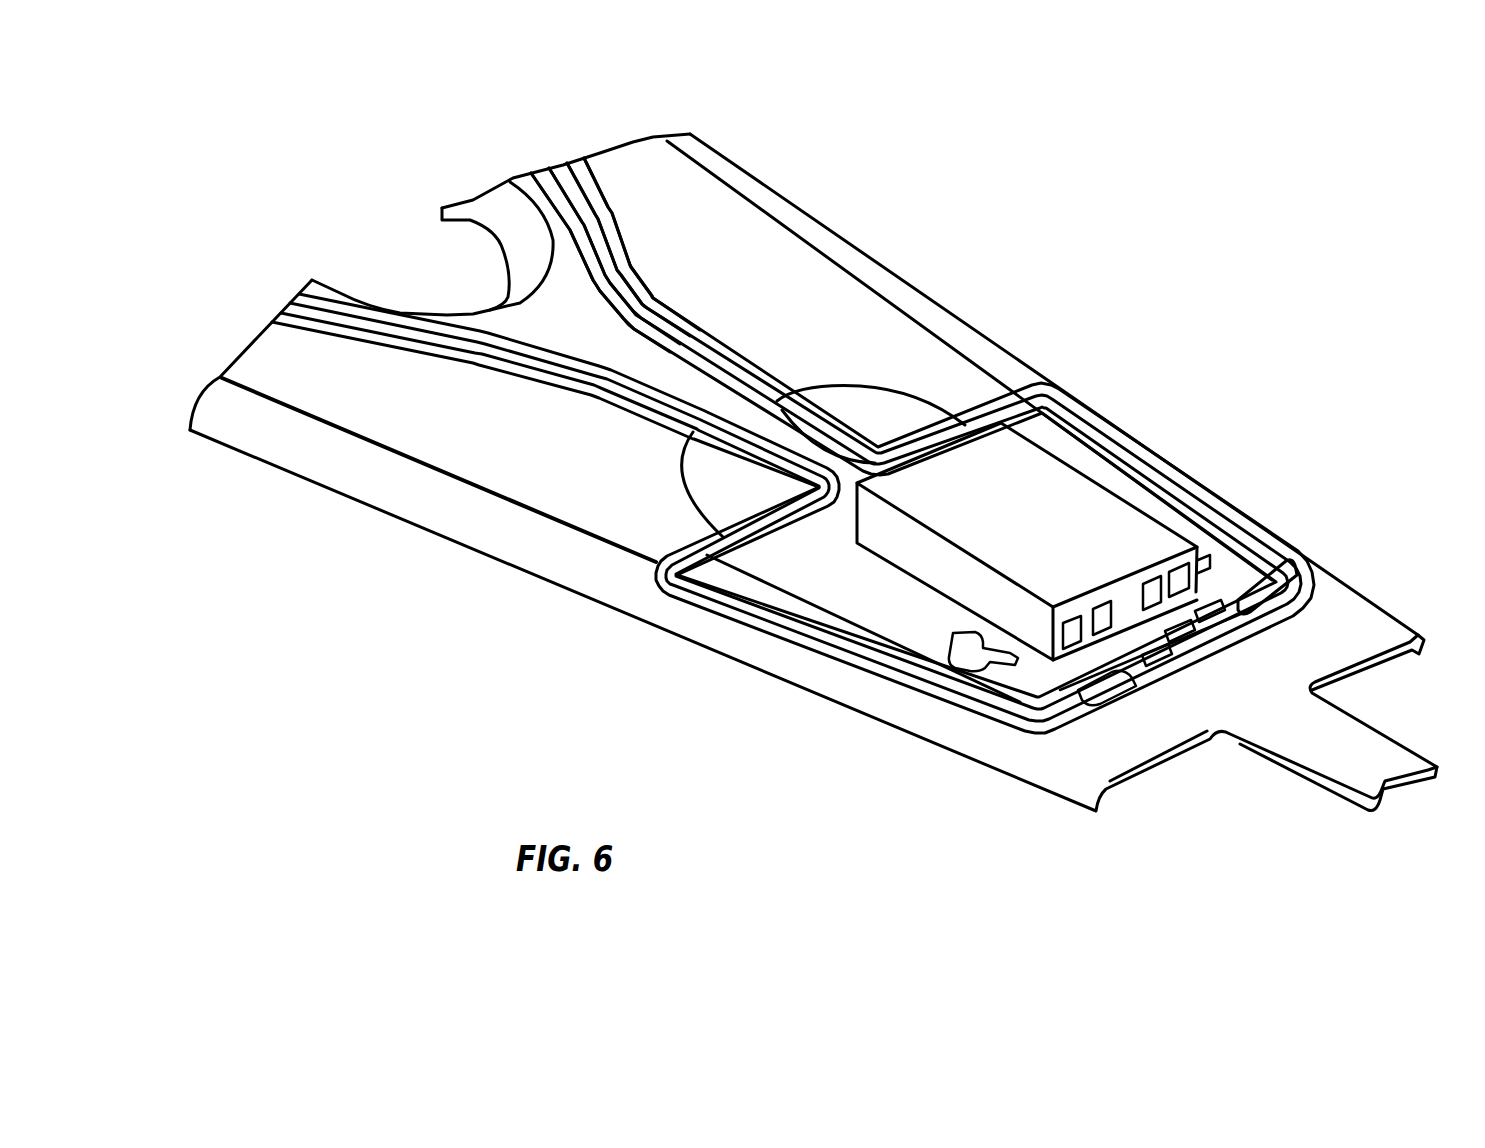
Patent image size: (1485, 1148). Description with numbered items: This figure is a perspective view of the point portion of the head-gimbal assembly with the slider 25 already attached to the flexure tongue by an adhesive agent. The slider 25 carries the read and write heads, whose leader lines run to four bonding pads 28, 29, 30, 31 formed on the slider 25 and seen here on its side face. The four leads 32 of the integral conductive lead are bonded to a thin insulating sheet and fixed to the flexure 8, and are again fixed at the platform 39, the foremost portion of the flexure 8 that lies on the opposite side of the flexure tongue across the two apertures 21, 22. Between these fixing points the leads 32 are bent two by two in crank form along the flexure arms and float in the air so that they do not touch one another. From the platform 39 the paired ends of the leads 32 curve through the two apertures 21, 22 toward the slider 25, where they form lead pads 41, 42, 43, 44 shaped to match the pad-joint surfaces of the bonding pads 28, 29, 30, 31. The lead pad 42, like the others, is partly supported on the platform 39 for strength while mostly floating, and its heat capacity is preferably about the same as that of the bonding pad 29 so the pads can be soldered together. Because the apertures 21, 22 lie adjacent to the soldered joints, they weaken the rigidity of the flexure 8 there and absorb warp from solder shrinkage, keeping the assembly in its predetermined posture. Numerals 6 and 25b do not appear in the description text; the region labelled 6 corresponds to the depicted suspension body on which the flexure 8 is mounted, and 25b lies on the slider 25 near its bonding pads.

The suspension load beam 6 is at (716, 638).
The flexure 8 is at (500, 455).
The aperture 21 is at (958, 688).
The aperture 22 is at (1268, 542).
The slider 25 is at (996, 480).
The chip terminal pad 25b is at (1140, 596).
The bonding pad 28 is at (1205, 560).
The bonding pad 29 is at (1192, 580).
The bonding pad 30 is at (1102, 603).
The bonding pad 31 is at (1072, 618).
The leads 32 is at (640, 310).
The platform 39 is at (1158, 655).
The lead pad 41 is at (1217, 615).
The lead pad 42 is at (1178, 635).
The lead pad 43 is at (1087, 697).
The lead pad 44 is at (1040, 690).